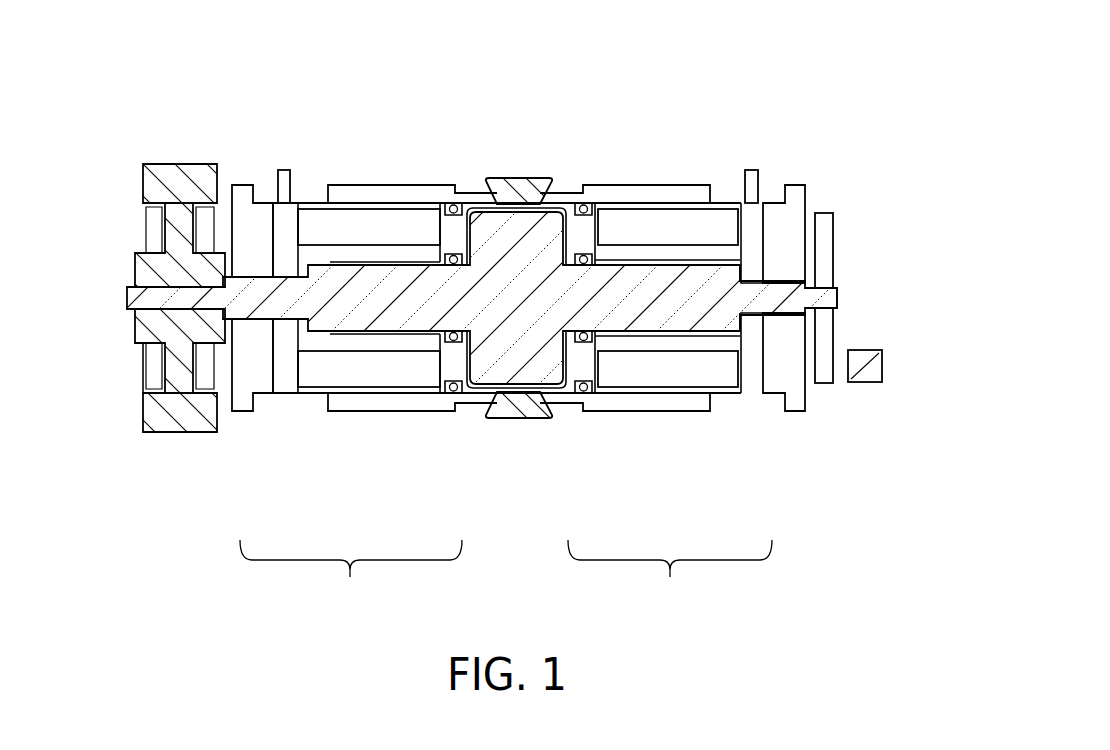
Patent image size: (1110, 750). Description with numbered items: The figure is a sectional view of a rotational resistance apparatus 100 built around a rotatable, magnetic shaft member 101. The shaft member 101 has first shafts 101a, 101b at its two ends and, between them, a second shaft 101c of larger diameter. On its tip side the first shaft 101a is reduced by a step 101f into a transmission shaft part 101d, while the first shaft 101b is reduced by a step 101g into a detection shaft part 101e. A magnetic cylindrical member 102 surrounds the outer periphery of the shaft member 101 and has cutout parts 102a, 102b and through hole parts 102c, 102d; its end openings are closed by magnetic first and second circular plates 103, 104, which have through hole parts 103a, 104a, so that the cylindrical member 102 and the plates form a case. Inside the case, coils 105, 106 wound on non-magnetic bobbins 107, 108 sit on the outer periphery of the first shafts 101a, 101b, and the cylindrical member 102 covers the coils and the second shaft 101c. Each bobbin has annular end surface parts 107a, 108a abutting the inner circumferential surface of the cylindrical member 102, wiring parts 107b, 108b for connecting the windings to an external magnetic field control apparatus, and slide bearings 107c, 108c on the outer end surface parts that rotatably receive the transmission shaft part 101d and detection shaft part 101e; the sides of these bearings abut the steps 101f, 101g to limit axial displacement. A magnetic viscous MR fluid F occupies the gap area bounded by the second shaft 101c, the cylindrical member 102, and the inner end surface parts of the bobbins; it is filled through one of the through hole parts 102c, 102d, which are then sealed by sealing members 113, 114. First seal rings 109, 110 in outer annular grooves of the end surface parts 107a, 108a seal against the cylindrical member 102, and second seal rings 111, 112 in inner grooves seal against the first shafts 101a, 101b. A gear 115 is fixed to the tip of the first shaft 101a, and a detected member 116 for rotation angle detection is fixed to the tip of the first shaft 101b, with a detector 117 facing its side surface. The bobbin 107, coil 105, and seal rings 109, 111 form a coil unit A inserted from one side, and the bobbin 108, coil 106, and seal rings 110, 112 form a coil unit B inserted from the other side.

The rotational resistance apparatus 100 is at (178, 434).
The shaft member 101 is at (126, 293).
The first shaft 101a is at (420, 262).
The first shaft 101b is at (635, 265).
The second shaft 101c is at (522, 209).
The transmission shaft part 101d is at (218, 240).
The detection shaft part 101e is at (818, 235).
The step 101f is at (330, 260).
The step 101g is at (740, 277).
The cylindrical member 102 is at (388, 185).
The cutout part 102a is at (330, 187).
The cutout part 102b is at (712, 188).
The through hole part 102c is at (496, 202).
The through hole part 102d is at (477, 413).
The first circular plate 103 is at (241, 185).
The through hole part 103a is at (253, 262).
The second circular plate 104 is at (786, 184).
The through hole part 104a is at (790, 268).
The coil 105 is at (333, 397).
The coil 106 is at (687, 390).
The bobbin 107 is at (371, 382).
The end surface part 107a is at (398, 372).
The wiring part 107b is at (284, 170).
The slide bearing 107c is at (273, 390).
The bobbin 108 is at (668, 385).
The end surface part 108a is at (643, 380).
The wiring part 108b is at (751, 170).
The slide bearing 108c is at (769, 393).
The first seal ring 109 is at (450, 390).
The first seal ring 110 is at (592, 388).
The second seal ring 111 is at (446, 380).
The second seal ring 112 is at (582, 393).
The sealing member 113 is at (493, 177).
The sealing member 114 is at (515, 420).
The gear 115 is at (143, 385).
The detected member 116 is at (833, 384).
The detector 117 is at (882, 362).
The MR fluid F is at (565, 210).
The coil unit A is at (351, 578).
The coil unit B is at (670, 578).